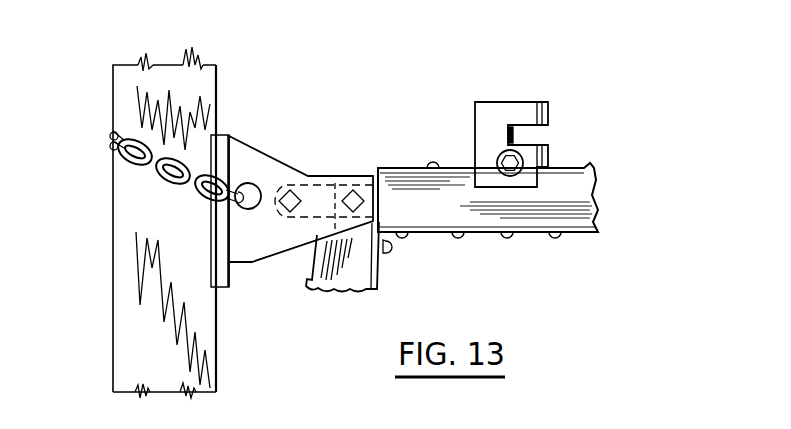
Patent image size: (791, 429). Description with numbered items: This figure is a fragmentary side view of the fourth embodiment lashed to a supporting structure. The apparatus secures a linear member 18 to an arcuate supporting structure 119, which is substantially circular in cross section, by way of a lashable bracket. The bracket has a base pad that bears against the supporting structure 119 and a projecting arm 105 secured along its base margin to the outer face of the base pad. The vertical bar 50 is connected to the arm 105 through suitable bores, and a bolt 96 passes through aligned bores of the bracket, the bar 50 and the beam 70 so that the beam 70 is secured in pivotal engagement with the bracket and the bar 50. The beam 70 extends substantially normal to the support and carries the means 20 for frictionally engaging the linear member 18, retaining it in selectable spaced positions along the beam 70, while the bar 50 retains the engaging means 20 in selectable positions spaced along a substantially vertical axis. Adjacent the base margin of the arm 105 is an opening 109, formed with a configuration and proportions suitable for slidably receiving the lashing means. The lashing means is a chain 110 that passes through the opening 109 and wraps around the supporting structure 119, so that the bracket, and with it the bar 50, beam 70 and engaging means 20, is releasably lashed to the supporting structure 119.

The linear member 18 is at (513, 134).
The means for frictionally engaging member 20 is at (494, 100).
The bar 50 is at (385, 272).
The beam 70 is at (386, 166).
The bolt 96 is at (346, 189).
The projecting arm 105 is at (241, 134).
The opening 109 is at (254, 184).
The chain 110 is at (118, 168).
The arcuate supporting structure 119 is at (218, 357).